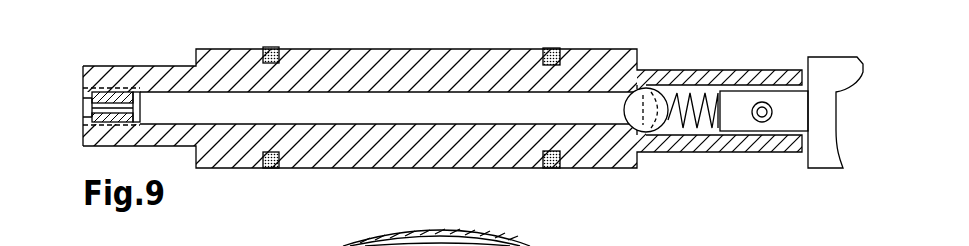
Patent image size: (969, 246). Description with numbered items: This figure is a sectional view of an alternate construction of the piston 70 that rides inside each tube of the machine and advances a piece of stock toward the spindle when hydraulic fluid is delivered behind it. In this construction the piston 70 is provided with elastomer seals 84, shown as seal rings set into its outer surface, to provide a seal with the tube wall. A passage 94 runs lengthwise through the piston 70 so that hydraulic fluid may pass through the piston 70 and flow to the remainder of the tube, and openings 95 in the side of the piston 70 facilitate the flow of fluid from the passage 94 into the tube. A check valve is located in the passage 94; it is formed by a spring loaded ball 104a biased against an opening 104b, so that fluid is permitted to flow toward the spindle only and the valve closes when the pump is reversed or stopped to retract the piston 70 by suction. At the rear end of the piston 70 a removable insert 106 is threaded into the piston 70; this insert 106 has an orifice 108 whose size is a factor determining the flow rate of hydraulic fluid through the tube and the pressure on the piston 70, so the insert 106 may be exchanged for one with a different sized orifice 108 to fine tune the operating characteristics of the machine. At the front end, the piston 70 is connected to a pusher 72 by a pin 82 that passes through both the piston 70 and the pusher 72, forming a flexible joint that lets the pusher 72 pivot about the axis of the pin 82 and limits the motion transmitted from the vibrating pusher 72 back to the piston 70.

The piston 70 is at (182, 66).
The passage 94 is at (248, 108).
The elastomer seals 84 is at (548, 50).
The removable insert 106 is at (110, 98).
The orifice 108 is at (110, 110).
The spring loaded ball 104a is at (626, 100).
The opening 104b is at (638, 88).
The openings 95 is at (682, 92).
The pin 82 is at (761, 103).
The pusher 72 is at (836, 88).